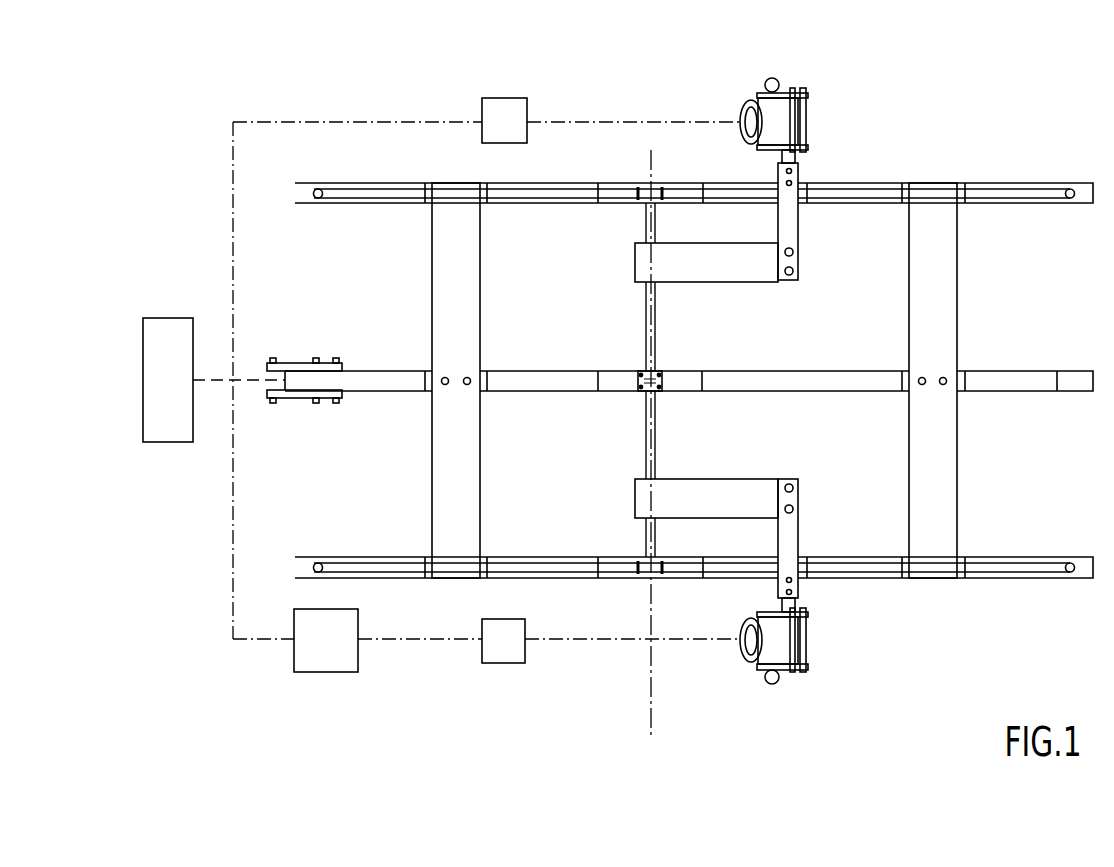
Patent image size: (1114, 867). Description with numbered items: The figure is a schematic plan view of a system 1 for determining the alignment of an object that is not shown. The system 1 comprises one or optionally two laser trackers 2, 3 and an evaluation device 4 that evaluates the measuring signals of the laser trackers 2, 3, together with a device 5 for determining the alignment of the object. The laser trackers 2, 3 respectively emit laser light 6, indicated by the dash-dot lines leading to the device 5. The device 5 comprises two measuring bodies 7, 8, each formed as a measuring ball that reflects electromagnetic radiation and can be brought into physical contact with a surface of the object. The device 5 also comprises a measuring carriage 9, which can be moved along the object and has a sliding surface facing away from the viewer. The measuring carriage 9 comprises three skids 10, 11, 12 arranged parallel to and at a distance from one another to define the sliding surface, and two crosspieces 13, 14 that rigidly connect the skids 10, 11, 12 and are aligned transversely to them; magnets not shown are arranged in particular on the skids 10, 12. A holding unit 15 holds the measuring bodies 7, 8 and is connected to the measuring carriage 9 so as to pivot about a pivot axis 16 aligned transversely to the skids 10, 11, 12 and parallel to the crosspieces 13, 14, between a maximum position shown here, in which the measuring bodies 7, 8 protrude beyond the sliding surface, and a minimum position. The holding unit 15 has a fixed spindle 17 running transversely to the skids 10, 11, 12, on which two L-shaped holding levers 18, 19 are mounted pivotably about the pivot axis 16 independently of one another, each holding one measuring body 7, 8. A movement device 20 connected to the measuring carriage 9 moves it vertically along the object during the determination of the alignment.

The system 1 is at (684, 75).
The laser tracker 2 is at (493, 107).
The laser tracker 3 is at (493, 652).
The evaluation device 4 is at (346, 658).
The device for determining the alignment 5 is at (950, 165).
The laser light 6 is at (617, 120).
The measuring body 7 is at (777, 129).
The measuring body 8 is at (782, 632).
The measuring carriage 9 is at (889, 183).
The skid 10 is at (1015, 190).
The skid 11 is at (1002, 383).
The skid 12 is at (971, 580).
The crosspiece 13 is at (460, 492).
The crosspiece 14 is at (940, 490).
The holding unit 15 is at (690, 283).
The pivot axis 16 is at (652, 697).
The fixed spindle 17 is at (645, 338).
The holding lever 18 is at (760, 262).
The holding lever 19 is at (744, 508).
The movement device 20 is at (180, 342).